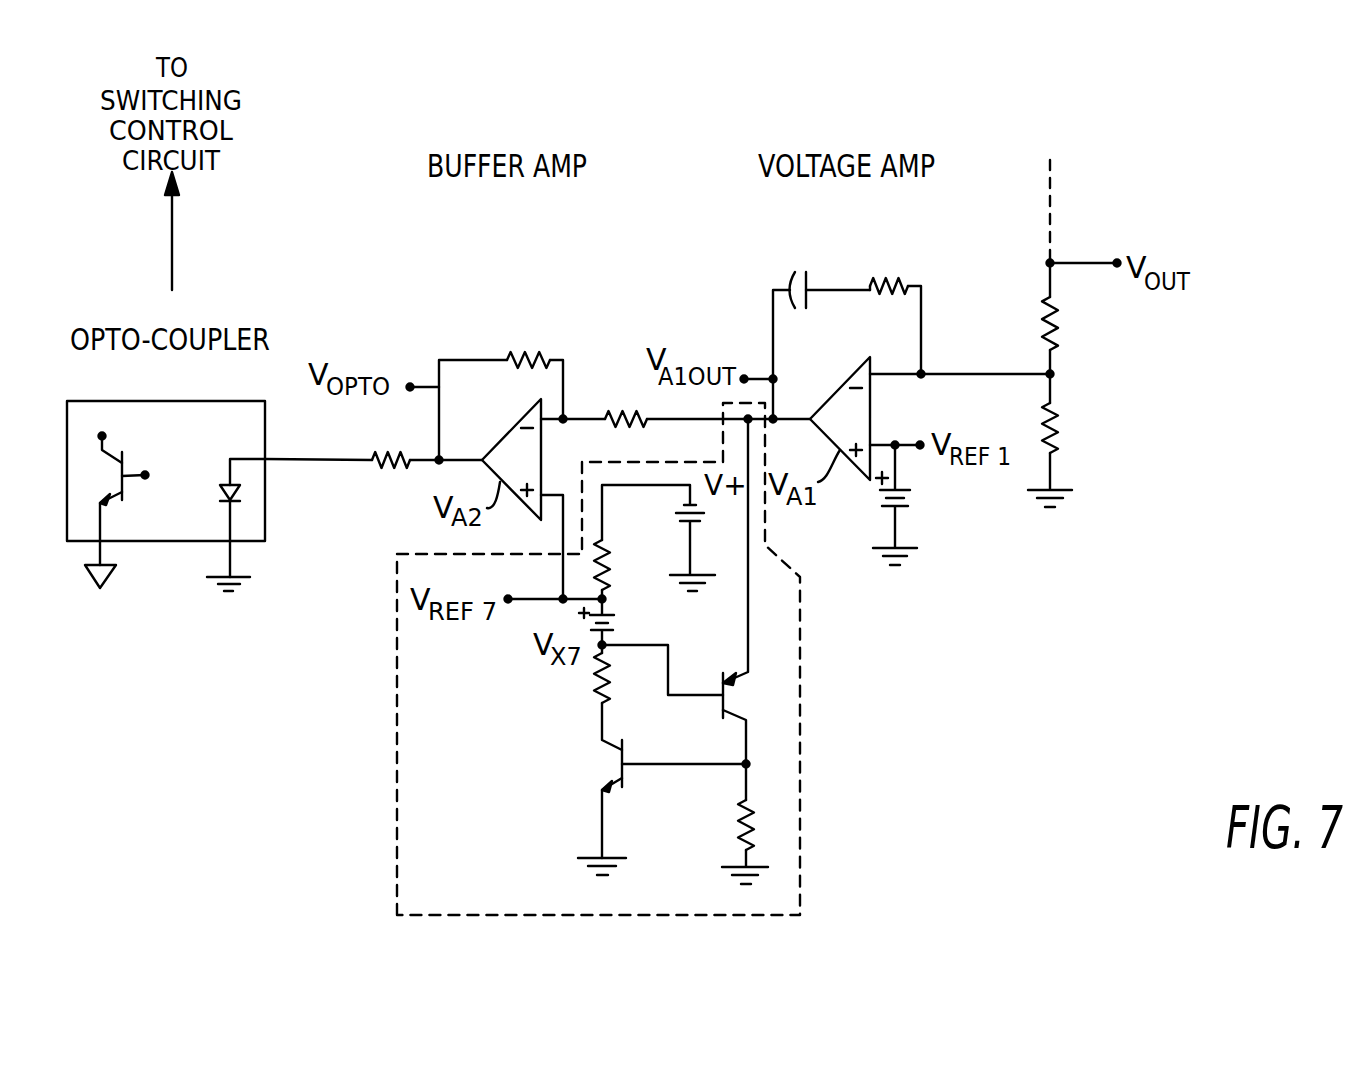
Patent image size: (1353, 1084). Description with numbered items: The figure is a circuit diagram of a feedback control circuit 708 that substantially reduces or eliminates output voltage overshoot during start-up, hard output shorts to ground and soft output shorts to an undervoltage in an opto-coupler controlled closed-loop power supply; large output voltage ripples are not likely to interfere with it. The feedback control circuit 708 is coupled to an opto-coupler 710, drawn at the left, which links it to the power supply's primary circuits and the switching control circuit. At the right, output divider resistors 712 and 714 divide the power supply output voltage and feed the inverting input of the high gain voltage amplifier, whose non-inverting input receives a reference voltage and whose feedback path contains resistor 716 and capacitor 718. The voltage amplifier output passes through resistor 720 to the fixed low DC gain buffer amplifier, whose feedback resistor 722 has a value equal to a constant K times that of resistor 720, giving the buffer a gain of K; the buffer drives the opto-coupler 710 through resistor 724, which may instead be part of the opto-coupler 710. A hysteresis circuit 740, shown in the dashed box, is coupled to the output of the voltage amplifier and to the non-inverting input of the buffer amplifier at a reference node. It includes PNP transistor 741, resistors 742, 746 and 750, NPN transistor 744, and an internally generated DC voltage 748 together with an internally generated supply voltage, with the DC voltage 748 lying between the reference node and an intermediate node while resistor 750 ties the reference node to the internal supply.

The feedback control circuit 708 is at (955, 792).
The opto-coupler 710 is at (183, 541).
The output divider resistor 712 is at (1063, 318).
The output divider resistor 714 is at (1060, 428).
The resistor 716 is at (898, 280).
The capacitor 718 is at (798, 275).
The resistor 720 is at (605, 432).
The resistor 722 is at (522, 345).
The resistor 724 is at (404, 452).
The hysteresis circuit 740 is at (803, 710).
The PNP transistor 741 is at (733, 714).
The resistor 742 is at (752, 832).
The NPN transistor 744 is at (600, 787).
The resistor 746 is at (596, 685).
The DC voltage 748 is at (614, 616).
The resistor 750 is at (607, 540).